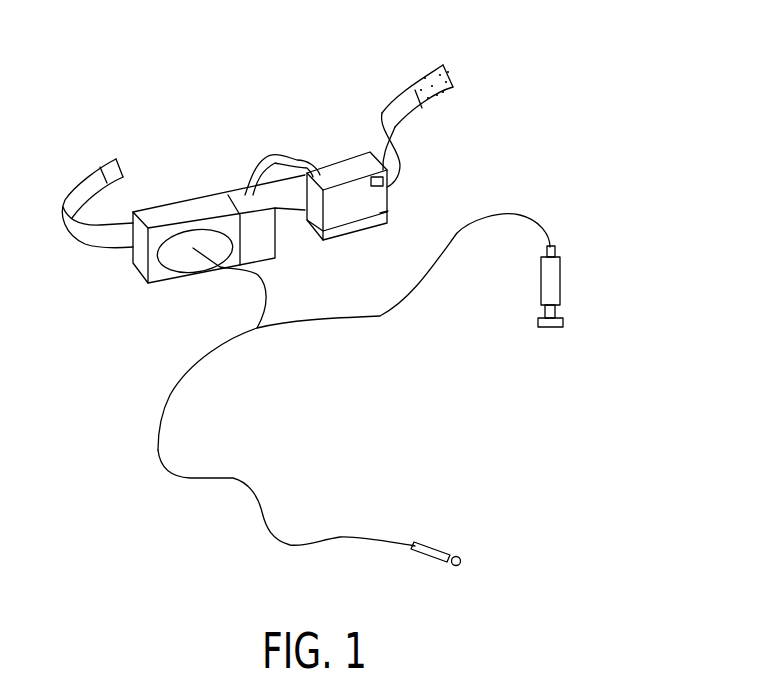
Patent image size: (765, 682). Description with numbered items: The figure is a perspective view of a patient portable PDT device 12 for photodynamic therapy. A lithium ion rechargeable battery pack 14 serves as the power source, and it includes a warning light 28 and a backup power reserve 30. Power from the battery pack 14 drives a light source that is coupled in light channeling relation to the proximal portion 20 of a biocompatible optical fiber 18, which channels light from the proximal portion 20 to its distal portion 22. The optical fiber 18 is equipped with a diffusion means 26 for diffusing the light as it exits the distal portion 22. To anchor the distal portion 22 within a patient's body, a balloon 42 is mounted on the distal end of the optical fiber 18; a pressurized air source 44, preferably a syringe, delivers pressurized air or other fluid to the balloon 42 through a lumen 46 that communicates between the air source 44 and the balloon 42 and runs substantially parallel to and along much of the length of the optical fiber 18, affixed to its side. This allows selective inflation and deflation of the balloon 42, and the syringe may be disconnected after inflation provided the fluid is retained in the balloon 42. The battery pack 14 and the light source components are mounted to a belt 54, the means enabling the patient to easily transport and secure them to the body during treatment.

The patient portable PDT device 12 is at (180, 62).
The battery pack 14 is at (352, 170).
The optical fiber 18 is at (158, 450).
The proximal portion 20 is at (262, 276).
The distal portion 22 is at (330, 538).
The diffusion means 26 is at (430, 542).
The warning light 28 is at (388, 187).
The backup power reserve 30 is at (388, 212).
The balloon 42 is at (463, 560).
The pressurized air source 44 is at (562, 280).
The lumen 46 is at (357, 318).
The belt 54 is at (100, 172).